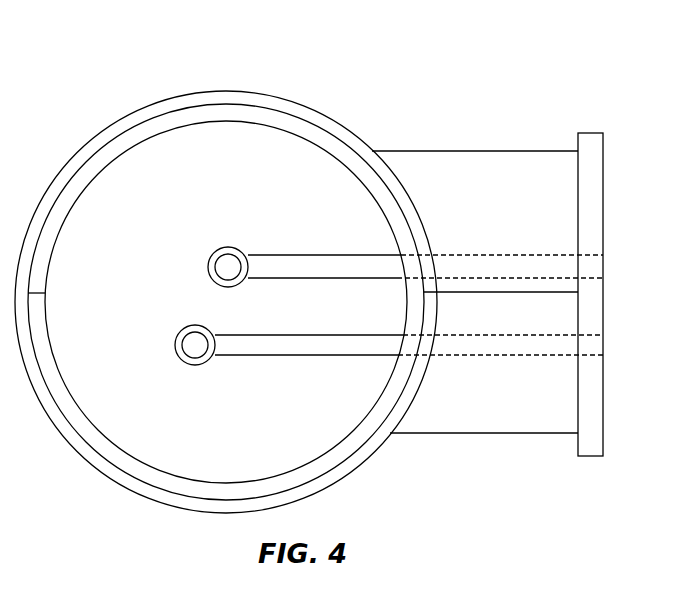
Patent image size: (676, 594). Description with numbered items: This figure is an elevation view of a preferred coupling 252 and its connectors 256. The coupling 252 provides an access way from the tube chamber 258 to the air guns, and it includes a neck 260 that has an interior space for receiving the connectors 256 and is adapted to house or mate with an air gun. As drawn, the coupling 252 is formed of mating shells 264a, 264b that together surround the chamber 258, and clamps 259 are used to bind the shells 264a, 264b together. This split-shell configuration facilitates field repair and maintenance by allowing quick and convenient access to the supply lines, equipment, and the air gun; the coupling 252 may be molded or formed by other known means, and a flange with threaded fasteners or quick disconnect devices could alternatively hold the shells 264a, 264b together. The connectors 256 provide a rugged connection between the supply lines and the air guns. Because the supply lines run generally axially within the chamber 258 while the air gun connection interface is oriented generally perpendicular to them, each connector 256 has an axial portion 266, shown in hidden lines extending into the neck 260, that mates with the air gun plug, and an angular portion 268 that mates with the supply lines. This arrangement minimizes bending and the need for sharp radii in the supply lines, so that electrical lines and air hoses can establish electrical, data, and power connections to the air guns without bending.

The coupling 252 is at (380, 61).
The clamps 259 is at (218, 100).
The mating shell 264a is at (106, 147).
The mating shell 264b is at (55, 384).
The chamber 258 is at (198, 427).
The neck 260 is at (462, 151).
The angular portion 268 is at (228, 247).
The connectors 256 is at (281, 261).
The axial portion 266 is at (453, 262).